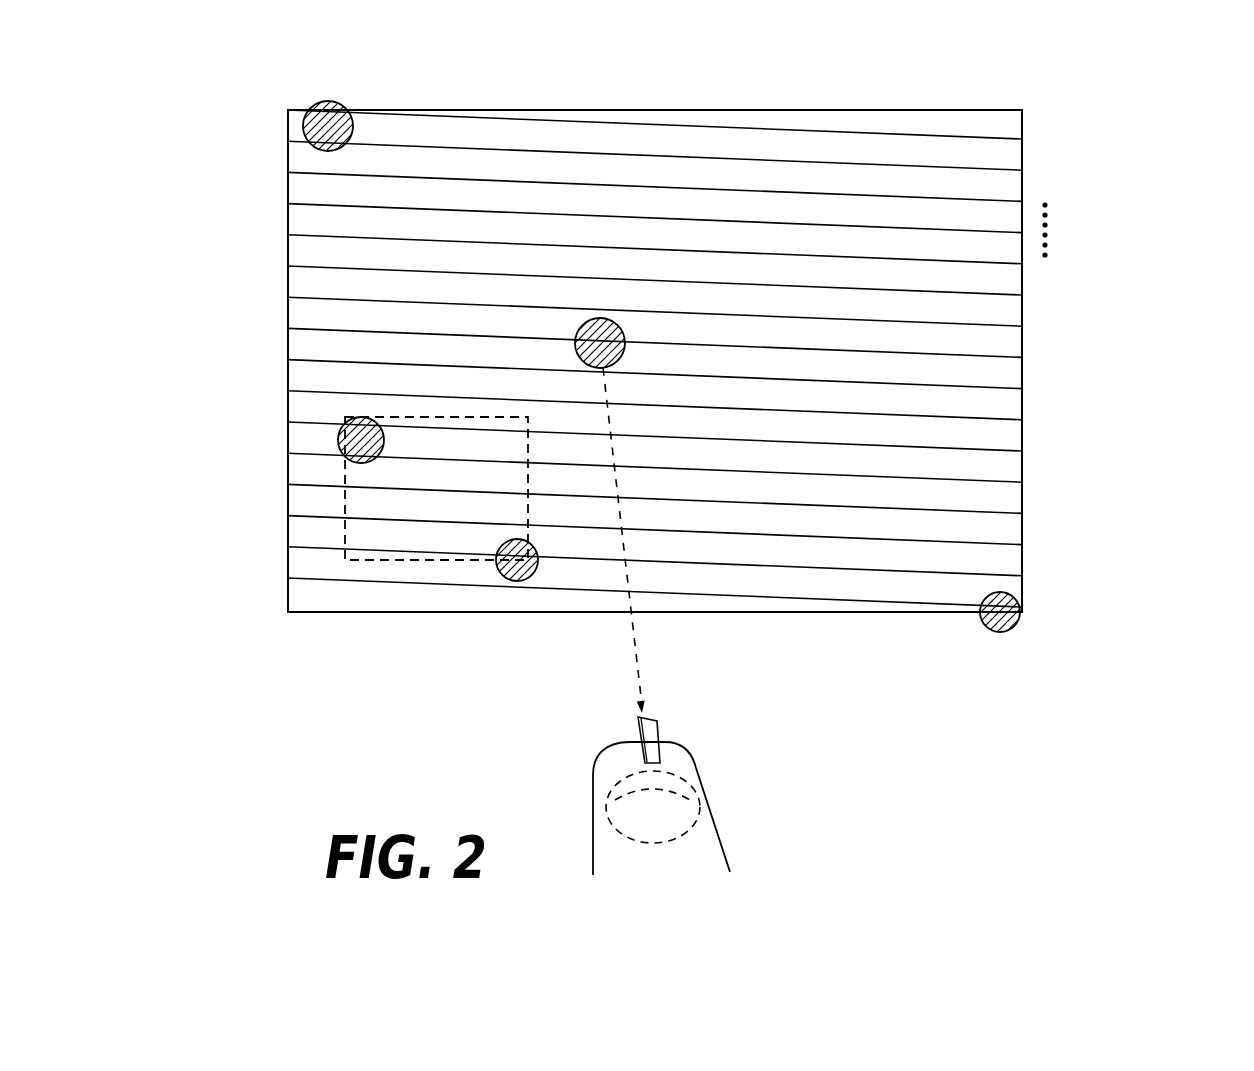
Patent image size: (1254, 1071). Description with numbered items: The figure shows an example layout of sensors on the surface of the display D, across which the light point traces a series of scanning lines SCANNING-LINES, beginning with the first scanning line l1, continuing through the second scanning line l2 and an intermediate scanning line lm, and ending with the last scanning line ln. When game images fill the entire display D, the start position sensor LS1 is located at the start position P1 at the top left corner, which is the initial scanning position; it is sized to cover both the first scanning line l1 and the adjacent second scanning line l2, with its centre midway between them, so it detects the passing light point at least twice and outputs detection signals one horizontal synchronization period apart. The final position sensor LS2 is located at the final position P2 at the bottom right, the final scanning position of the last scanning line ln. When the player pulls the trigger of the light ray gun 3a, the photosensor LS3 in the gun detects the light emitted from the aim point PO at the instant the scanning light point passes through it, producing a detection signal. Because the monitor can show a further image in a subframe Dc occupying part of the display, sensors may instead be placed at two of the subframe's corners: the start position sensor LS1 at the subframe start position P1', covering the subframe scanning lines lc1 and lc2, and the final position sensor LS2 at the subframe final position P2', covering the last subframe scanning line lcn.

The display D is at (1003, 212).
The scanning lines SCANNING-LINES is at (1008, 360).
The first scanning line l1 is at (1047, 134).
The second scanning line l2 is at (1047, 162).
The m-th scanning line lm is at (1051, 367).
The last scanning line ln is at (748, 599).
The first subframe scanning line lc1 is at (667, 441).
The second subframe scanning line lc2 is at (667, 471).
The last subframe scanning line lcn is at (672, 565).
The start position P1 is at (252, 86).
The start position sensor LS1 is at (333, 101).
The aim point PO is at (617, 326).
The subframe Dc is at (385, 540).
The subframe start position P1' is at (307, 447).
The subframe final position P2' is at (533, 599).
The final position sensor LS2 is at (1010, 632).
The final position P2 is at (1082, 629).
The light ray gun 3a is at (695, 853).
The photosensor LS3 is at (680, 807).